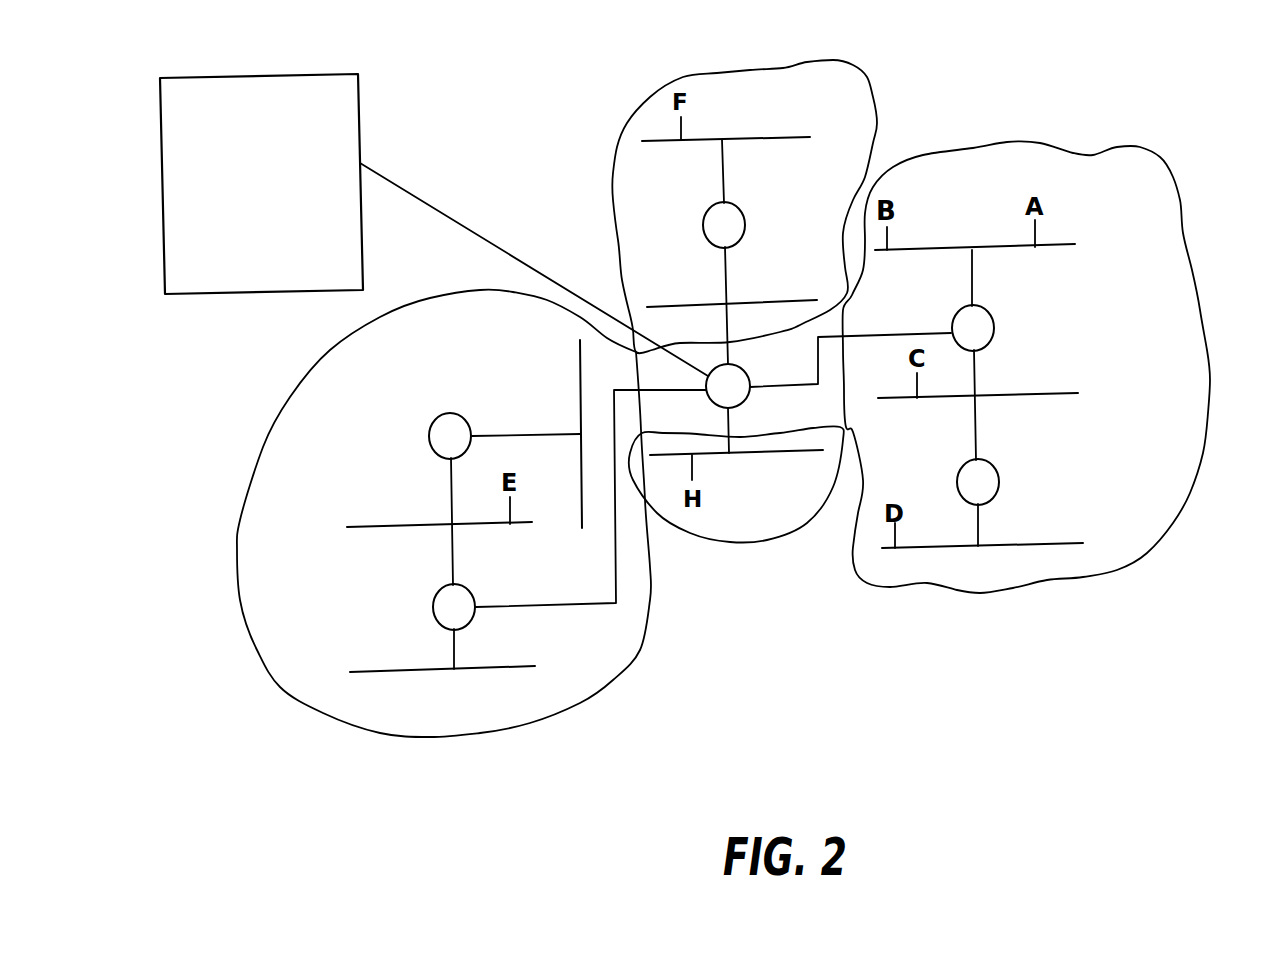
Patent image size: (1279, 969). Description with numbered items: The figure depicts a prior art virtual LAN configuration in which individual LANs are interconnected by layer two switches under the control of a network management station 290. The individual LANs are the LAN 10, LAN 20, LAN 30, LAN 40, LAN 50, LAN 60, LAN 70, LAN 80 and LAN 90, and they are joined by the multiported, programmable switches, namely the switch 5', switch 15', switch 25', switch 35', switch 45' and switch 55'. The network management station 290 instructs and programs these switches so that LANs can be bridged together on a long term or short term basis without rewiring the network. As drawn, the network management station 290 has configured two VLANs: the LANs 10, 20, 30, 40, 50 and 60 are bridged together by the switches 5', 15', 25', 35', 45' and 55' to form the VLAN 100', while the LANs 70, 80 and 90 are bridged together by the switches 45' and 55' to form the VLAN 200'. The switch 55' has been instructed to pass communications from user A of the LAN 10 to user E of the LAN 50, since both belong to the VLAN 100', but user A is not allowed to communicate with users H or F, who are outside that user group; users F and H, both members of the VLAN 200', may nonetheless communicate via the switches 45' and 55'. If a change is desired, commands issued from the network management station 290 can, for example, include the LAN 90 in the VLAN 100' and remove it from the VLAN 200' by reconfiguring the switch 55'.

The network management station 290 is at (336, 74).
The VLAN 200' is at (771, 280).
The VLAN 100' is at (1055, 366).
The LAN 70 is at (802, 137).
The layer 2 switch 45' is at (750, 208).
The LAN 80 is at (801, 302).
The layer 2 switch 55' is at (757, 396).
The LAN 90 is at (787, 453).
The LAN 10 is at (1067, 242).
The layer 2 switch 5' is at (993, 316).
The LAN 20 is at (1067, 392).
The layer 2 switch 15' is at (1000, 467).
The LAN 30 is at (1067, 543).
The layer 2 switch 25' is at (438, 409).
The LAN 40 is at (577, 377).
The LAN 50 is at (355, 525).
The layer 2 switch 35' is at (476, 589).
The LAN 60 is at (355, 670).